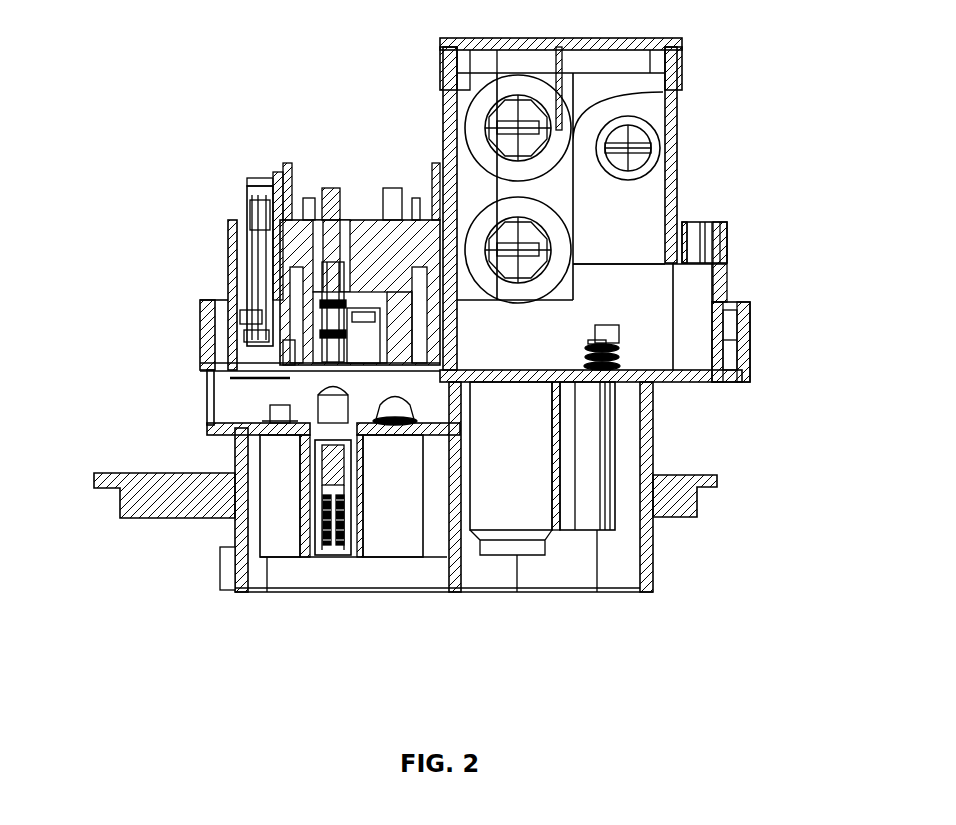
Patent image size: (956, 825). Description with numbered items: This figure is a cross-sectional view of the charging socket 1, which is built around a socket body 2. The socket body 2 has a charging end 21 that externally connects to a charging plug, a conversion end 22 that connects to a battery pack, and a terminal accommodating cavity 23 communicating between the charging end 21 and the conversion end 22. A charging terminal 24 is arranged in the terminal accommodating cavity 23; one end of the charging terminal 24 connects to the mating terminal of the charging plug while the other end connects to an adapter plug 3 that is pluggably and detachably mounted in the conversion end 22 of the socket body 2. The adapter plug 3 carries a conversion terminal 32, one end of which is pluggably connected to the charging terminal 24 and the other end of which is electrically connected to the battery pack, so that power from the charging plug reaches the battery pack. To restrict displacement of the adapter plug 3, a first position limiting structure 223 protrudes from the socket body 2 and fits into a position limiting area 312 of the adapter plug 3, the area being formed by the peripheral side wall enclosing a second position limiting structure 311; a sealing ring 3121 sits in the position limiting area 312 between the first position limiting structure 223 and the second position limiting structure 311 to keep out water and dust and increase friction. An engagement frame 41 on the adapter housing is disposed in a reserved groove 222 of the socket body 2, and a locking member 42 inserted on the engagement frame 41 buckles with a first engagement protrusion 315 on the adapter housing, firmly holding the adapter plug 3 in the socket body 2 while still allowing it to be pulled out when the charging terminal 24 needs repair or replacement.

The charging socket 1 is at (683, 138).
The socket body 2 is at (648, 432).
The charging end 21 is at (230, 588).
The conversion end 22 is at (227, 228).
The terminal accommodating cavity 23 is at (325, 465).
The charging terminal 24 is at (330, 525).
The adapter plug 3 is at (417, 237).
The conversion terminal 32 is at (332, 205).
The engagement frame 41 is at (227, 265).
The locking member 42 is at (247, 185).
The reserved groove 222 is at (262, 335).
The first position limiting structure 223 is at (285, 347).
The second position limiting structure 311 is at (405, 345).
The position limiting area 312 is at (200, 367).
The first engagement protrusion 315 is at (258, 318).
The sealing ring 3121 is at (415, 268).